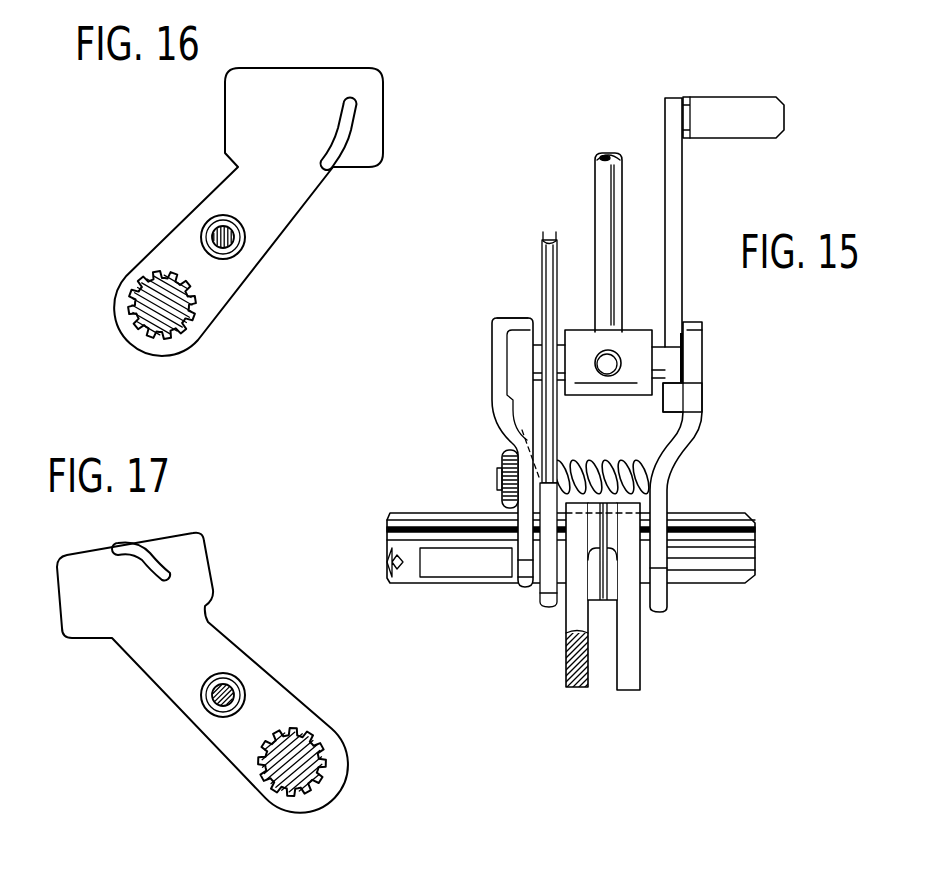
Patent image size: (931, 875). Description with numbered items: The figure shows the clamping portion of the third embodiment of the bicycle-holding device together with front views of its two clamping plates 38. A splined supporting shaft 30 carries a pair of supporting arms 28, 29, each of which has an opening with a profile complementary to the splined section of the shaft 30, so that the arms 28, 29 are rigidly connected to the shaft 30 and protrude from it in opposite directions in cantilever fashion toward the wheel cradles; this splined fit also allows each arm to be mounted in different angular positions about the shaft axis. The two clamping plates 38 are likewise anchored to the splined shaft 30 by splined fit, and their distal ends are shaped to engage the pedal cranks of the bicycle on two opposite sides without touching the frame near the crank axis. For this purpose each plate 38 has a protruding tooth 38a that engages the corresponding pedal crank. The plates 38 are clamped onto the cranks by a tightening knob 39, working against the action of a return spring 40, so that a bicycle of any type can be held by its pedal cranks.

In FIG. 15, the supporting arm 28 is at (568, 622).
In FIG. 15, the supporting arm 29 is at (633, 653).
In FIG. 15, the splined supporting shaft 30 is at (455, 562).
In FIG. 16, the clamping plate 38 is at (267, 220).
In FIG. 17, the clamping plate 38 is at (218, 647).
In FIG. 15, the clamping plate 38 is at (498, 418).
In FIG. 16, the tooth 38a is at (350, 130).
In FIG. 17, the tooth 38a is at (137, 550).
In FIG. 15, the tooth 38a is at (517, 320).
In FIG. 15, the tightening knob 39 is at (502, 497).
In FIG. 15, the return spring 40 is at (605, 460).